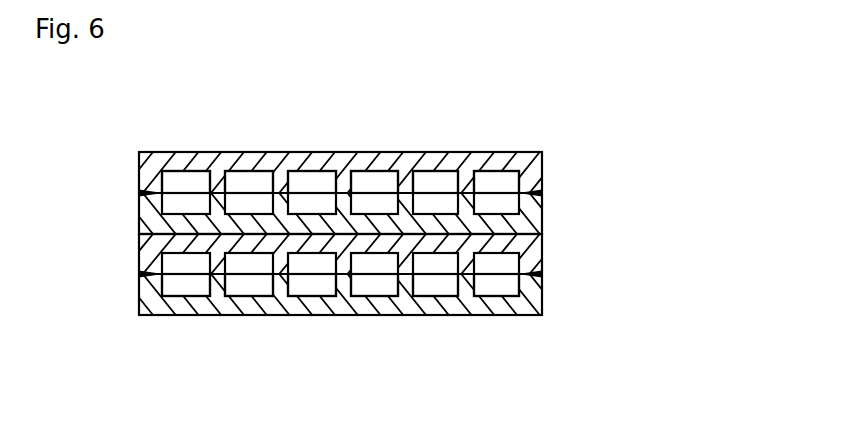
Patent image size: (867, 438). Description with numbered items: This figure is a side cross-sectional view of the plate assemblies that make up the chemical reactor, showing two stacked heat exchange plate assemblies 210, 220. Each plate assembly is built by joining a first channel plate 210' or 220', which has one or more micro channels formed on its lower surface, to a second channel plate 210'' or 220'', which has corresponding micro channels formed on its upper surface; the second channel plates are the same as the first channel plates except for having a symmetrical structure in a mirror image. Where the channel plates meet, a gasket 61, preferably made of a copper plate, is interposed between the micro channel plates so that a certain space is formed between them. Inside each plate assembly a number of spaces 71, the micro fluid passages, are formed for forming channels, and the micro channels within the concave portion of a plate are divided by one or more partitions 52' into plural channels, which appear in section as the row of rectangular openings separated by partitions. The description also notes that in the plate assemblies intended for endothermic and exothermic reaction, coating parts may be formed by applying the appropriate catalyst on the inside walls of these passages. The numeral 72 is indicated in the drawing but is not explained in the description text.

The gasket 61 is at (139, 193).
The spaces 71 is at (196, 183).
The lower electrode portion 72 is at (183, 298).
The partition 52' is at (340, 192).
The heat exchange plate assembly 210 is at (447, 193).
The first channel plate 210' is at (384, 233).
The second channel plate 210'' is at (389, 233).
The heat exchange plate assembly 220 is at (447, 274).
The first channel plate 220' is at (384, 233).
The second channel plate 220'' is at (389, 233).